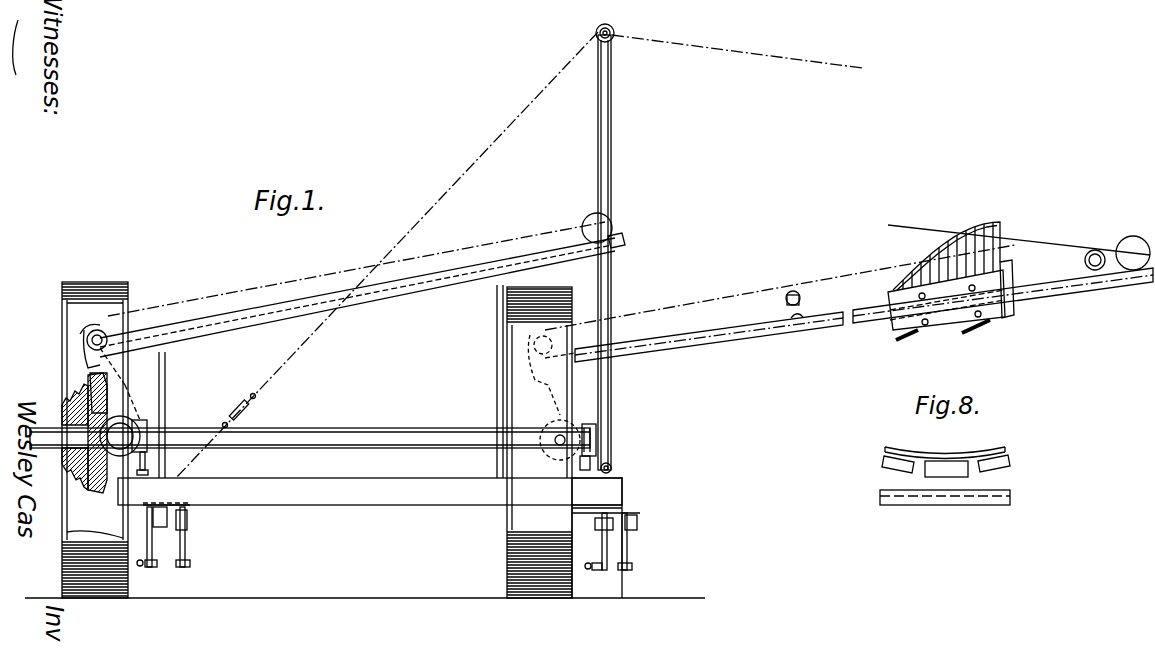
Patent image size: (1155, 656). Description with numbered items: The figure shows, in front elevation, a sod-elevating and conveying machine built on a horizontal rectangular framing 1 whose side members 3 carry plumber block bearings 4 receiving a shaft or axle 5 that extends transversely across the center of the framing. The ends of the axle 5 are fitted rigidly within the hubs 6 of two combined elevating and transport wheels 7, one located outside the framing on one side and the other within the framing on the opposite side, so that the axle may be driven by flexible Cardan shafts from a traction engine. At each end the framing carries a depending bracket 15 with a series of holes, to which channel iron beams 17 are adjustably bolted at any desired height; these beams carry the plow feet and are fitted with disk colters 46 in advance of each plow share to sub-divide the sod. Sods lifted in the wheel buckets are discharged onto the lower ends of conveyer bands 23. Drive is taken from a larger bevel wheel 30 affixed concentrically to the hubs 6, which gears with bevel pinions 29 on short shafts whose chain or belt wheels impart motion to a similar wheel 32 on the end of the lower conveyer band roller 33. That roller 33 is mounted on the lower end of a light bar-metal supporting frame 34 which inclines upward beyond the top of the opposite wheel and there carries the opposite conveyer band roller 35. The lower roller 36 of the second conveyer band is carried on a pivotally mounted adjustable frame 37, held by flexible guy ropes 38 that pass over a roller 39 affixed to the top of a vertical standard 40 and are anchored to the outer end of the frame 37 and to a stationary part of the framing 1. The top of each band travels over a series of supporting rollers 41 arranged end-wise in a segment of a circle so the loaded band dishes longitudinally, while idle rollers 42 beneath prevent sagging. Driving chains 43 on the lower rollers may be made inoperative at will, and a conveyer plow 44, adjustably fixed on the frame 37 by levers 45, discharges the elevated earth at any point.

In FIG. 1, the horizontal rectangular framing 1 is at (370, 491).
In FIG. 1, the side member 3 is at (150, 452).
In FIG. 1, the plumber block bearing 4 is at (140, 420).
In FIG. 1, the shaft or axle 5 is at (343, 428).
In FIG. 1, the hub 6 is at (66, 412).
In FIG. 1, the combined elevating and transport wheel 7 is at (78, 507).
In FIG. 1, the depending bracket 15 is at (188, 540).
In FIG. 1, the channel iron beam 17 is at (147, 515).
In FIG. 1, the conveyer band 23 is at (300, 280).
In FIG. 8, the conveyer band 23 is at (922, 456).
In FIG. 1, the bevel pinion 29 is at (126, 384).
In FIG. 1, the bevel wheel 30 is at (88, 480).
In FIG. 1, the chain or belt wheel 32 is at (86, 342).
In FIG. 1, the lower conveyer band roller 33 is at (105, 330).
In FIG. 1, the supporting frame 34 is at (166, 407).
In FIG. 1, the conveyer band roller 35 is at (590, 220).
In FIG. 1, the lower roller 36 is at (620, 355).
In FIG. 1, the adjustable frame 37 is at (735, 345).
In FIG. 1, the guy rope 38 is at (478, 160).
In FIG. 1, the roller 39 is at (613, 38).
In FIG. 1, the vertical standard 40 is at (612, 178).
In FIG. 1, the supporting roller 41 is at (795, 291).
In FIG. 8, the supporting roller 41 is at (888, 457).
In FIG. 1, the idle roller 42 is at (802, 322).
In FIG. 8, the idle roller 42 is at (953, 505).
In FIG. 1, the driving chain 43 is at (90, 375).
In FIG. 1, the conveyer plow 44 is at (985, 235).
In FIG. 1, the lever 45 is at (968, 333).
In FIG. 1, the disk colter 46 is at (165, 581).